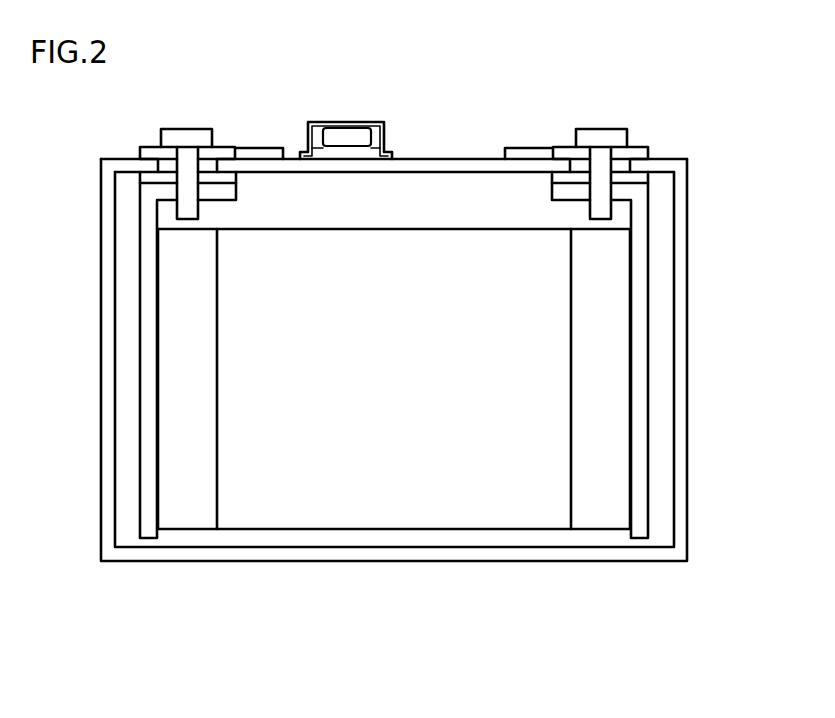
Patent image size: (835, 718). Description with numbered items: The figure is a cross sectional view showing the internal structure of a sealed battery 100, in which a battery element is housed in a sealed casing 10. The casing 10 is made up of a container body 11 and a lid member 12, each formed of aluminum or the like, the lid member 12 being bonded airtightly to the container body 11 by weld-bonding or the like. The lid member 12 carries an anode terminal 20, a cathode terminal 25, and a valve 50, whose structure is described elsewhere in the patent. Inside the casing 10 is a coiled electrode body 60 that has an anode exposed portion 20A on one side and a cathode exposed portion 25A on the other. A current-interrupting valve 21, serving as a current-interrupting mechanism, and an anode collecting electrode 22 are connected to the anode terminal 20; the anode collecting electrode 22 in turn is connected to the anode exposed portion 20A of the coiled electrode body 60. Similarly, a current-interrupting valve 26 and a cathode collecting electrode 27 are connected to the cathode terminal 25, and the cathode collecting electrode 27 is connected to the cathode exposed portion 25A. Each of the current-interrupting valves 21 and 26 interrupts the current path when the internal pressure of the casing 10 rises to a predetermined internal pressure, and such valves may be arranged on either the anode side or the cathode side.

The sealed battery 100 is at (717, 608).
The casing 10 is at (747, 130).
The container body 11 is at (680, 217).
The lid member 12 is at (655, 165).
The anode terminal 20 is at (563, 150).
The anode exposed portion 20A is at (607, 428).
The current-interrupting valve 21 is at (560, 177).
The anode collecting electrode 22 is at (562, 192).
The cathode terminal 25 is at (222, 152).
The cathode exposed portion 25A is at (180, 428).
The current-interrupting valve 26 is at (225, 177).
The cathode collecting electrode 27 is at (155, 191).
The valve 50 is at (395, 135).
The coiled electrode body 60 is at (395, 505).